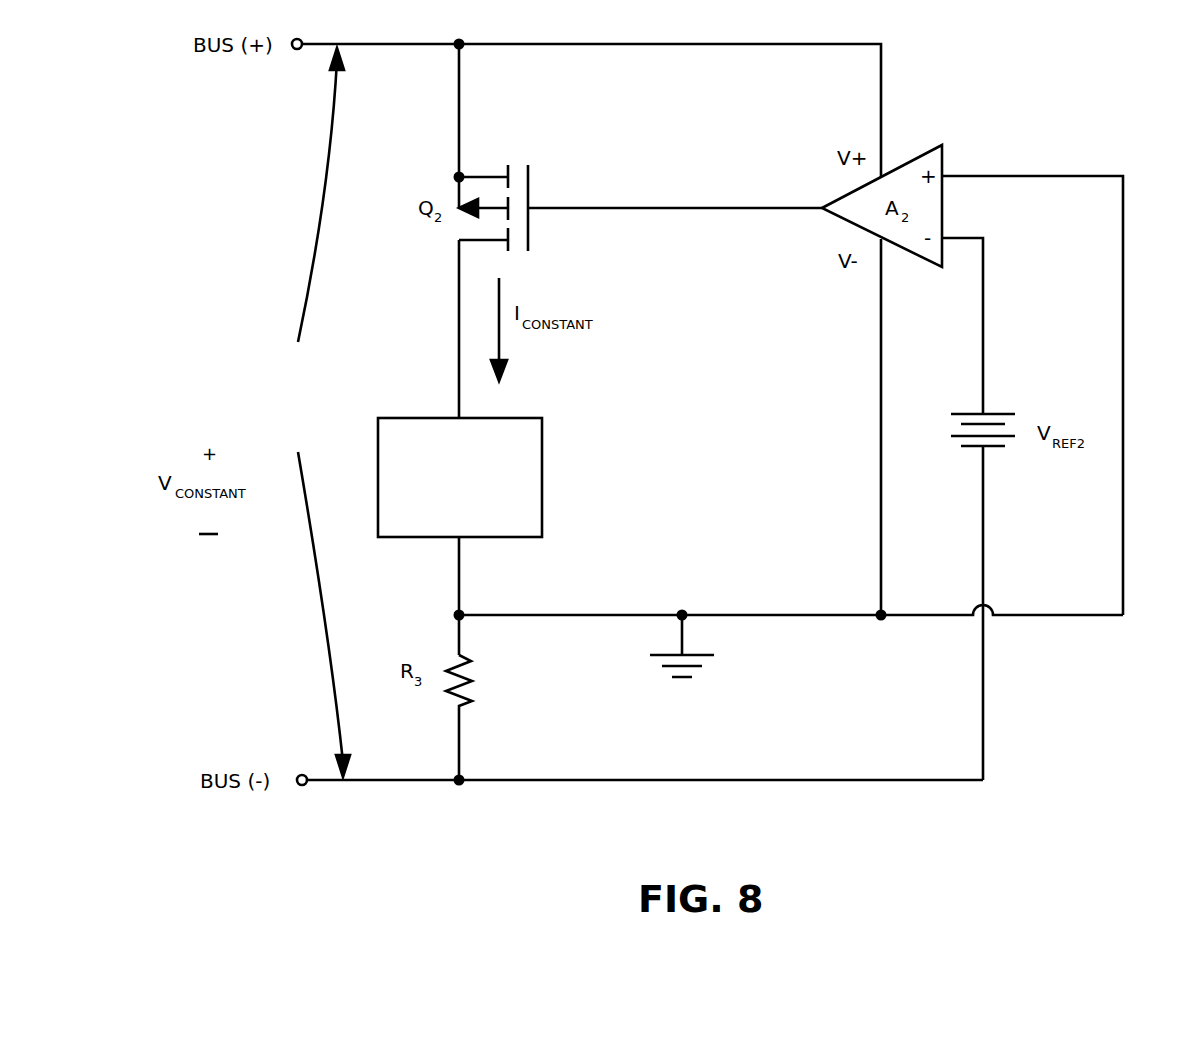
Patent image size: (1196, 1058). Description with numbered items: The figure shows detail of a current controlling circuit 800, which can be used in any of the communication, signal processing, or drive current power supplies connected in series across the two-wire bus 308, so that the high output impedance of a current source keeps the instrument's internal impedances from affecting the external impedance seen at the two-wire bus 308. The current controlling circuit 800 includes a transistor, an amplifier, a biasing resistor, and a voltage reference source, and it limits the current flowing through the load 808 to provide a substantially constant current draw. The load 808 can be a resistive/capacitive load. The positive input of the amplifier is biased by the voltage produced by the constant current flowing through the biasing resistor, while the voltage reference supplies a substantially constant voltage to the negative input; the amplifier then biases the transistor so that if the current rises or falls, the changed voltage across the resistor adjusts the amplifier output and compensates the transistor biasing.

The two-wire bus 308 is at (260, 437).
The load 808 is at (441, 501).
The current controlling circuit 800 is at (1015, 740).